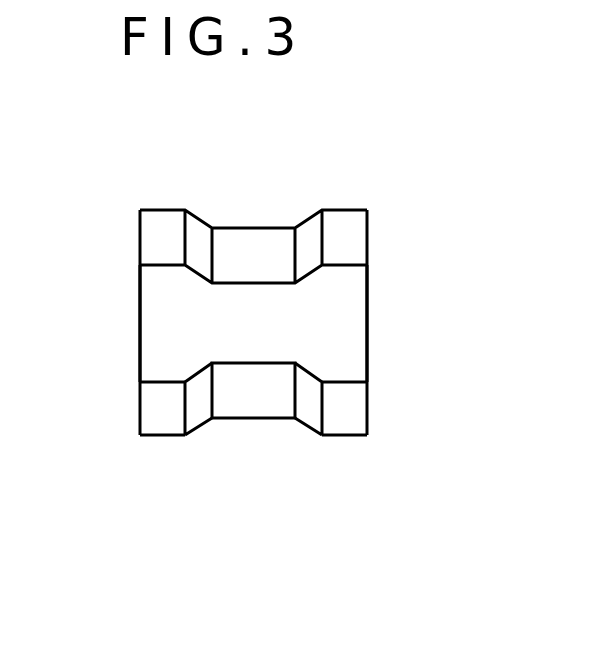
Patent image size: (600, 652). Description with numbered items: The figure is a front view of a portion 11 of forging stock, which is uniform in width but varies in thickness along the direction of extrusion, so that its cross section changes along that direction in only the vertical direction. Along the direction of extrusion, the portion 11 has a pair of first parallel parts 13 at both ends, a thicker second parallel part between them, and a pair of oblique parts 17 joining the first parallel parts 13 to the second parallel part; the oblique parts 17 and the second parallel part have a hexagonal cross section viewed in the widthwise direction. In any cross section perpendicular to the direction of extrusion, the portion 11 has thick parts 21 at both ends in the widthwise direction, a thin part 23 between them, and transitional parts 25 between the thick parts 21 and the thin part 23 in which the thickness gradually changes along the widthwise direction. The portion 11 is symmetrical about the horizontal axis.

The portion 11 is at (122, 158).
The first parallel part 13 is at (165, 327).
The oblique part 17 is at (140, 232).
The thick part 21 is at (163, 407).
The thin part 23 is at (254, 395).
The transitional part 25 is at (198, 403).